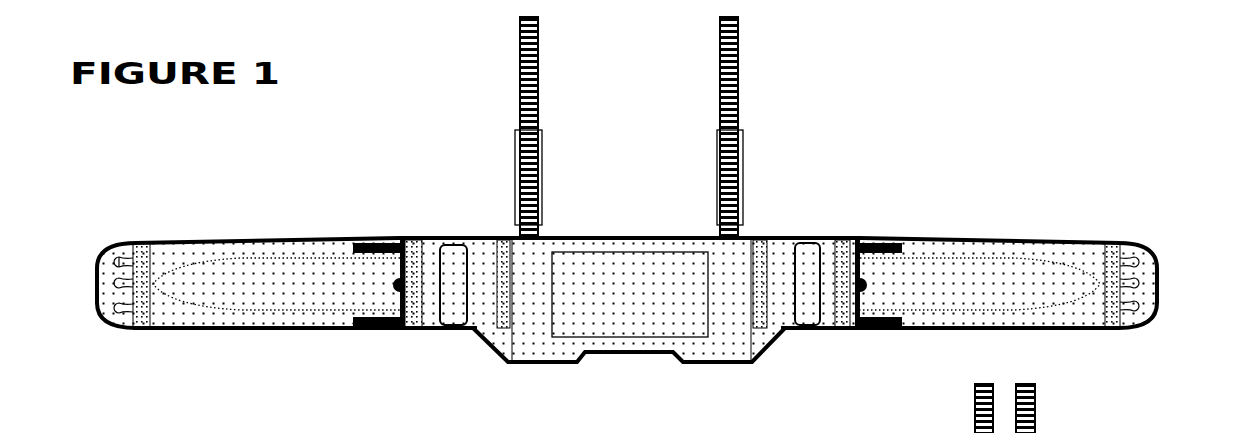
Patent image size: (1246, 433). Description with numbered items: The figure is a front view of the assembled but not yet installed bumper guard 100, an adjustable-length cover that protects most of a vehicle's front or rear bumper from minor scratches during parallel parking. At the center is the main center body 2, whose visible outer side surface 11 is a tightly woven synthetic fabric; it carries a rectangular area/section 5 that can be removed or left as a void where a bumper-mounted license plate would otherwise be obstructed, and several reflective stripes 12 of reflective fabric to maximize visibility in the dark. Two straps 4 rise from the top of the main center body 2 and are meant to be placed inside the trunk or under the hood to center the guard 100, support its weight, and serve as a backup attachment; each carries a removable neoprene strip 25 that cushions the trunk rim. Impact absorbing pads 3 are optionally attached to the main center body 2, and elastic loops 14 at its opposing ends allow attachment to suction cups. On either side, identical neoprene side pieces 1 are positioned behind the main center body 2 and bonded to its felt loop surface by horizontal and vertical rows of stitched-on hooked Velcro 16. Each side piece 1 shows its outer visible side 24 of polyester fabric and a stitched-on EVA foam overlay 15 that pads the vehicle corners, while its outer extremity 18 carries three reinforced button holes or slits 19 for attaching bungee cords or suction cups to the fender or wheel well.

The adjustable length complete coverage bumper guard 100 is at (472, 156).
The side pieces 1 is at (340, 350).
The main center body 2 is at (622, 220).
The impact absorbing pads 3 is at (451, 340).
The straps 4 is at (700, 132).
The rectangular area/section 5 is at (627, 297).
The outer side surface 11 is at (540, 332).
The reflective stripes 12 is at (148, 290).
The elastic loops 14 is at (388, 281).
The EVA foam overlay 15 is at (287, 290).
The stitched on hooked Velcro strips 16 is at (375, 242).
The extremities of the side pieces 18 is at (100, 322).
The button holes or reinforced slits 19 is at (106, 262).
The outer visible side 24 is at (198, 252).
The neoprene strips 25 is at (552, 212).